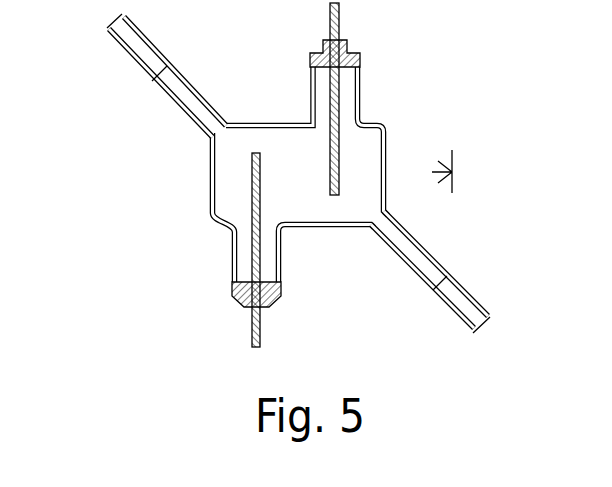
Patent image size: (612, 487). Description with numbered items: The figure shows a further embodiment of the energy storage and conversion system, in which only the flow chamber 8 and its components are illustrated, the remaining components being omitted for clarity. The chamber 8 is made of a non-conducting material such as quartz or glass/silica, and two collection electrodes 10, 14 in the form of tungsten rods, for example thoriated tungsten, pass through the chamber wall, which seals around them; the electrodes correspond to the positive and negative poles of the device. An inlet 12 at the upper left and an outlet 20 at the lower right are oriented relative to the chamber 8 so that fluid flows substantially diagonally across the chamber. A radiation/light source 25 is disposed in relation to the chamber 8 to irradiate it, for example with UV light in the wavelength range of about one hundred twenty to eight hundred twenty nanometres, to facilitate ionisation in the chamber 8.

The flow chamber 8 is at (287, 150).
The collection electrode 10 is at (252, 207).
The inlet 12 is at (178, 75).
The collection electrode 14 is at (338, 154).
The outlet 20 is at (458, 291).
The radiation/light source 25 is at (453, 163).